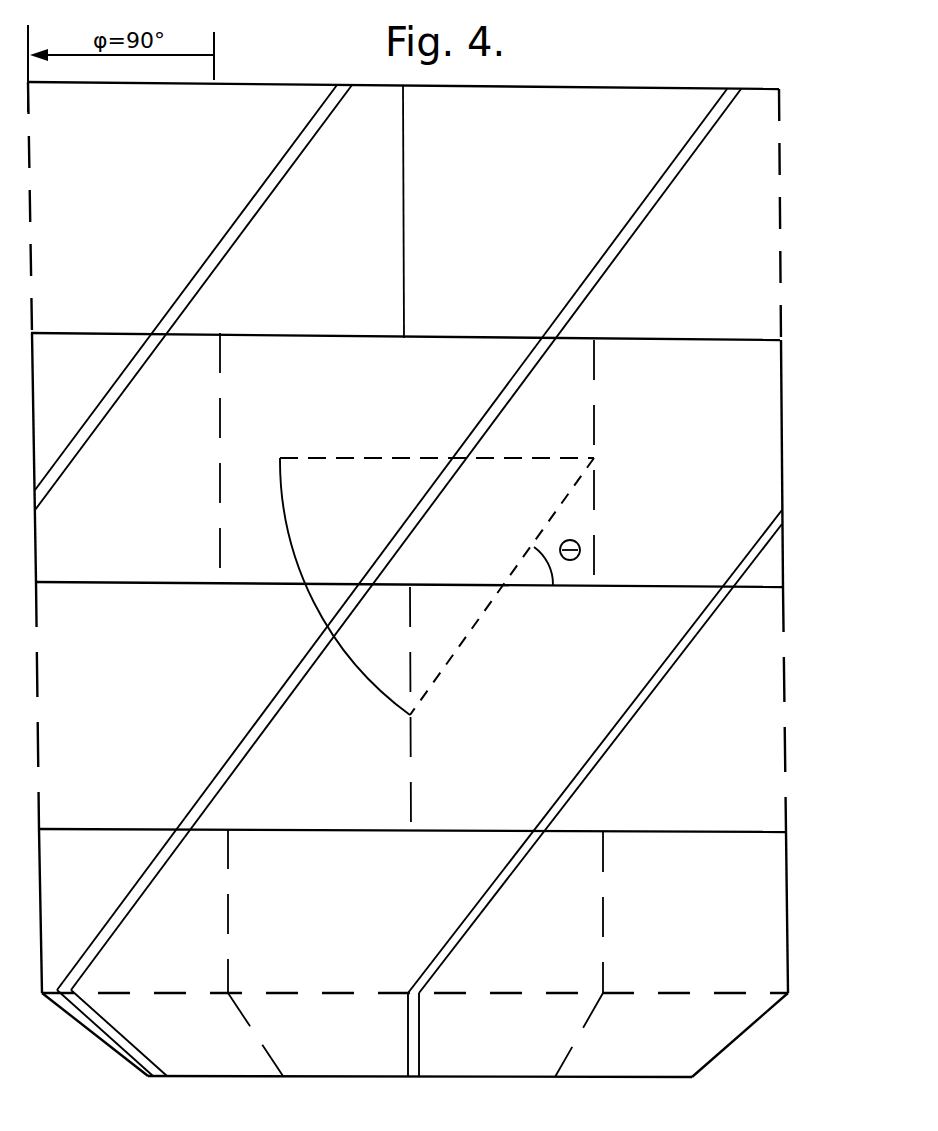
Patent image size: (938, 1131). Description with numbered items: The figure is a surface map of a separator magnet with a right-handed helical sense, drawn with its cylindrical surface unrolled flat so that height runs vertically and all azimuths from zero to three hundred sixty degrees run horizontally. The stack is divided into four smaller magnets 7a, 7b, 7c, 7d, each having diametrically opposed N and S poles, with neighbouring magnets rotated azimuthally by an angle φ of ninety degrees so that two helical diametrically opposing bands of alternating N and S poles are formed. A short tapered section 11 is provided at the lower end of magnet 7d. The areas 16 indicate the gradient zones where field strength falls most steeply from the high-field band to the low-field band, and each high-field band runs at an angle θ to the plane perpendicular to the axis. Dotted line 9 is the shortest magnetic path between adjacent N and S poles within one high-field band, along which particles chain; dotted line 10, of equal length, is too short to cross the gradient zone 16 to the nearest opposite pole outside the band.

The gradient zones 16 is at (320, 108).
The smaller magnet 7a is at (760, 272).
The smaller magnet 7b is at (758, 408).
The smaller magnet 7c is at (760, 642).
The smaller magnet 7d is at (770, 946).
The tapered section 11 is at (755, 1027).
The dotted line 10 is at (415, 457).
The dotted line 9 is at (467, 638).